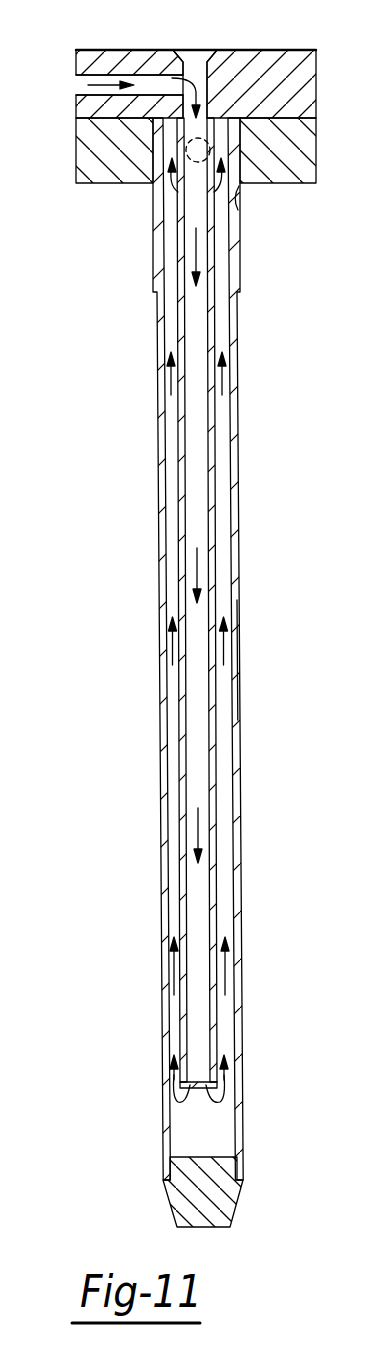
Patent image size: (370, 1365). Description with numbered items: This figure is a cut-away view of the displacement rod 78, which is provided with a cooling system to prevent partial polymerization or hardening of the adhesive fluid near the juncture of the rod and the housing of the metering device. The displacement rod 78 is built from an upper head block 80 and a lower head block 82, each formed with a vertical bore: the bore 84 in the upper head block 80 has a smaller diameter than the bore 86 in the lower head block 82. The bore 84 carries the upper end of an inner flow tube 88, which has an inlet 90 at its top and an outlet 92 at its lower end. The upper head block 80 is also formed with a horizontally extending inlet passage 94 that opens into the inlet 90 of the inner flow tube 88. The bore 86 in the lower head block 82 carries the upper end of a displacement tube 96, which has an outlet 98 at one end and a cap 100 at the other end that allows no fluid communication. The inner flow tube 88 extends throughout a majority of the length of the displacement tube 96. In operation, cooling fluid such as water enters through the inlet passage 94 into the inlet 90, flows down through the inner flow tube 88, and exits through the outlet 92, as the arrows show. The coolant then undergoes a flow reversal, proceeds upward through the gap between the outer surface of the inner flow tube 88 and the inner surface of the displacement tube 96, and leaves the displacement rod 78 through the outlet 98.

The displacement rod 78 is at (238, 364).
The upper head block 80 is at (284, 58).
The lower head block 82 is at (316, 146).
The vertical bore 84 is at (218, 62).
The vertical bore 86 is at (241, 209).
The inner flow tube 88 is at (208, 436).
The inlet 90 is at (172, 78).
The outlet 92 is at (201, 1088).
The inlet passage 94 is at (74, 85).
The displacement tube 96 is at (241, 688).
The outlet 98 is at (197, 163).
The cap 100 is at (233, 1207).